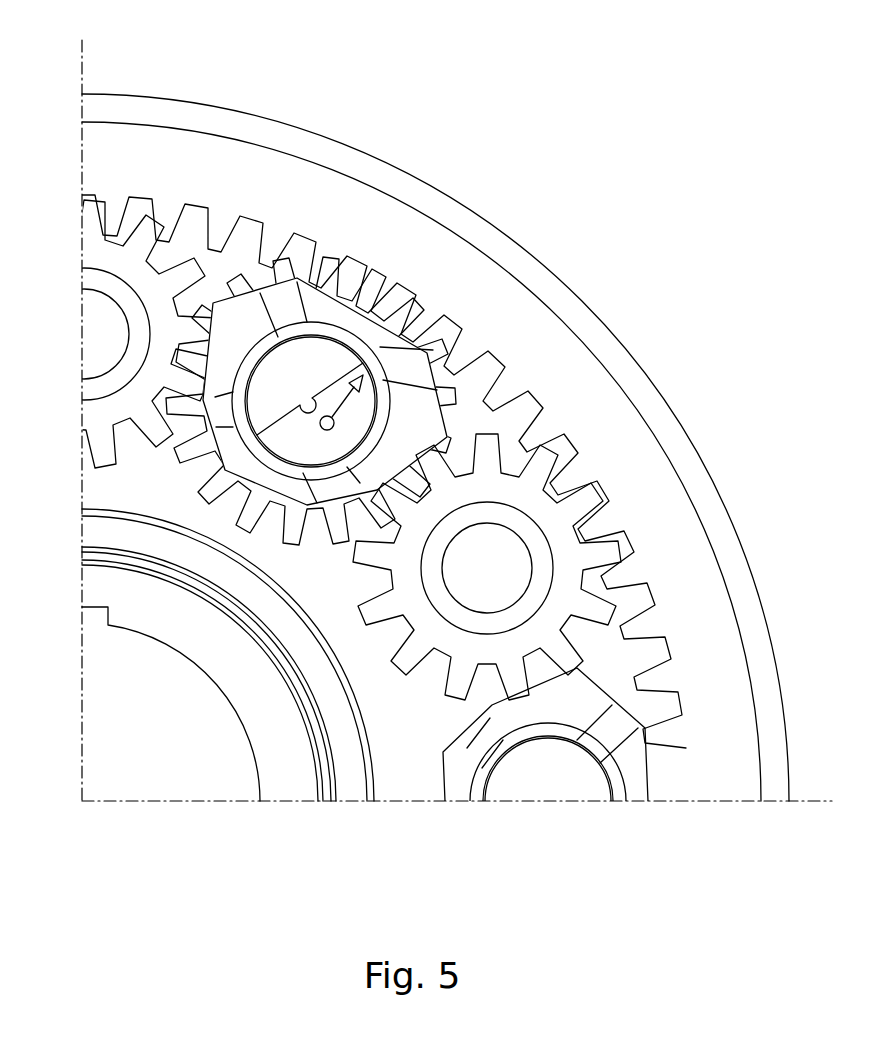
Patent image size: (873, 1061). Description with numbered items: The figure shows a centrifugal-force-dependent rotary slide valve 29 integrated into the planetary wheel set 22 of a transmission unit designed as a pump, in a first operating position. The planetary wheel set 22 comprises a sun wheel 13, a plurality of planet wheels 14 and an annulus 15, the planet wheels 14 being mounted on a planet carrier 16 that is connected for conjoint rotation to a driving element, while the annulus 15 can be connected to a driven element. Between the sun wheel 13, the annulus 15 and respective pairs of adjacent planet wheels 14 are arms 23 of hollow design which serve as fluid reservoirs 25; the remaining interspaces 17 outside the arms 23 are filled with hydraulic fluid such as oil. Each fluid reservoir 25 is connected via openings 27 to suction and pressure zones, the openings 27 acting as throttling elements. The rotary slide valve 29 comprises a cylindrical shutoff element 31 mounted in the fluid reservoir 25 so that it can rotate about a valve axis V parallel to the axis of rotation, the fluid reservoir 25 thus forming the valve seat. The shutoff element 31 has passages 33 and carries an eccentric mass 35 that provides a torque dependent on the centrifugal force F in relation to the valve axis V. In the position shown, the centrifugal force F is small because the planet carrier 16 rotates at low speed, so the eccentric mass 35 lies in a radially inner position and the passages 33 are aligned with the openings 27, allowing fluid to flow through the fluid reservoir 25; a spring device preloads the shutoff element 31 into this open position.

The sun wheel 13 is at (262, 692).
The planet wheels 14 is at (105, 258).
The annulus 15 is at (703, 592).
The planet carrier 16 is at (473, 573).
The interspaces 17 is at (453, 717).
The planetary wheel set 22 is at (372, 93).
The arms 23 is at (393, 345).
The fluid reservoirs 25 is at (570, 778).
The openings 27 is at (293, 304).
The rotary slide valve 29 is at (400, 440).
The shutoff element 31 is at (305, 470).
The passages 33 is at (278, 300).
The eccentric mass 35 is at (455, 418).
The valve axis V is at (363, 363).
The centrifugal force F is at (326, 432).